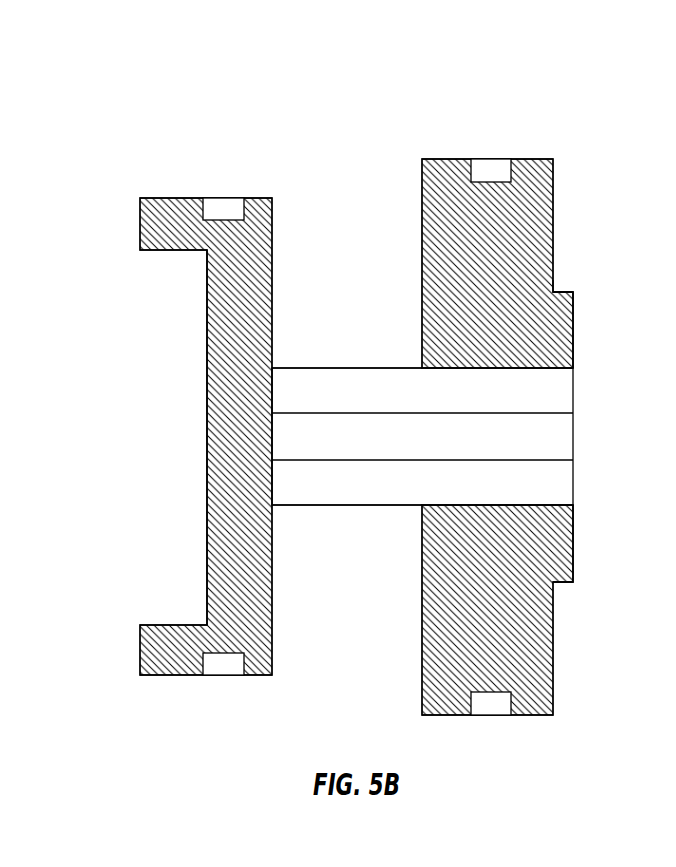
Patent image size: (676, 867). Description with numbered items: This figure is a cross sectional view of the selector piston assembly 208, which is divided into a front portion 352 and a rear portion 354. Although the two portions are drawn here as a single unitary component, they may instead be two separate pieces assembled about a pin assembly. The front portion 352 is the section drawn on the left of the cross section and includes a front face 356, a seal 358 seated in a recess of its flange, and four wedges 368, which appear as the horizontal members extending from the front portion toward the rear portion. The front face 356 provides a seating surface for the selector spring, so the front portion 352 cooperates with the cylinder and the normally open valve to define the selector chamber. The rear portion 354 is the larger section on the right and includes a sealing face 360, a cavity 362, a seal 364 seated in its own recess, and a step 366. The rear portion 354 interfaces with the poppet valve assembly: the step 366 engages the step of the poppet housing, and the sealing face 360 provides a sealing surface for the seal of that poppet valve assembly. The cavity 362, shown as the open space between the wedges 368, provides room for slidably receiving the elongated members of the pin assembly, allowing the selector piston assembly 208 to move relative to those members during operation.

The selector piston assembly 208 is at (146, 138).
The front portion 352 is at (175, 533).
The rear portion 354 is at (602, 633).
The front face 356 is at (207, 290).
The seal 358 is at (223, 207).
The sealing face 360 is at (573, 330).
The cavity 362 is at (497, 402).
The seal 364 is at (490, 165).
The step 366 is at (561, 292).
The wedges 368 is at (313, 368).